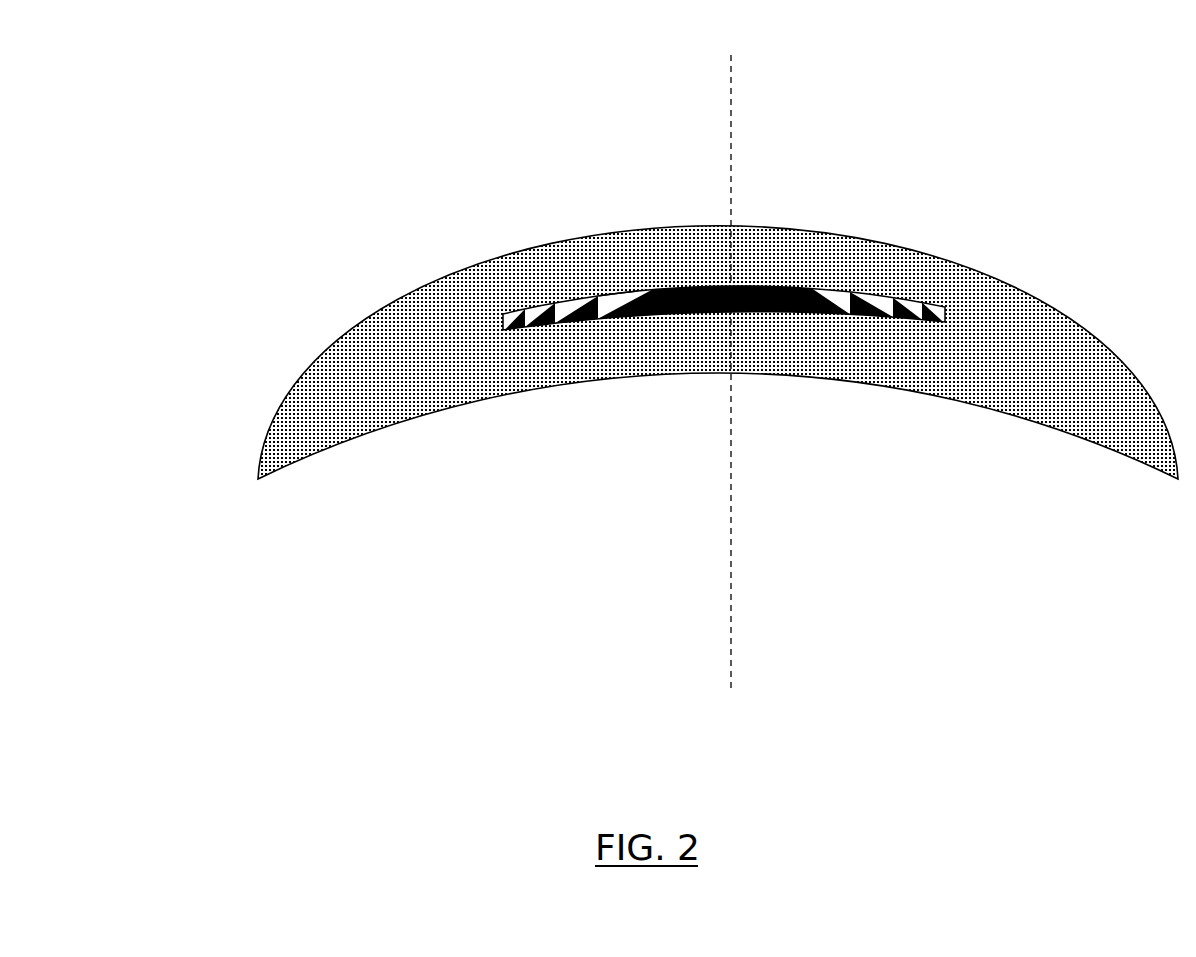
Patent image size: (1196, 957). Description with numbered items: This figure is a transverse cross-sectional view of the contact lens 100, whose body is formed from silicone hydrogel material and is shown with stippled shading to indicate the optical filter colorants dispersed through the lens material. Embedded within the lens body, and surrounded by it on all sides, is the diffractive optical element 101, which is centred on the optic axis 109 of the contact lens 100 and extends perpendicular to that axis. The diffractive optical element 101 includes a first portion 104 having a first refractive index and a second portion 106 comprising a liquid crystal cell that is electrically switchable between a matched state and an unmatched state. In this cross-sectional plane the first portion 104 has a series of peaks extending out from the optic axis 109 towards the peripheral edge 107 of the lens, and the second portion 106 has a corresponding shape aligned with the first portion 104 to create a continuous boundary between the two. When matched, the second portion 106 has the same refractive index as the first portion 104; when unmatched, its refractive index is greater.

The contact lens 100 is at (1060, 189).
The diffractive optical element 101 is at (740, 289).
The first portion 104 is at (570, 323).
The second portion 106 is at (620, 292).
The peripheral edge 107 is at (258, 479).
The optic axis 109 is at (731, 552).